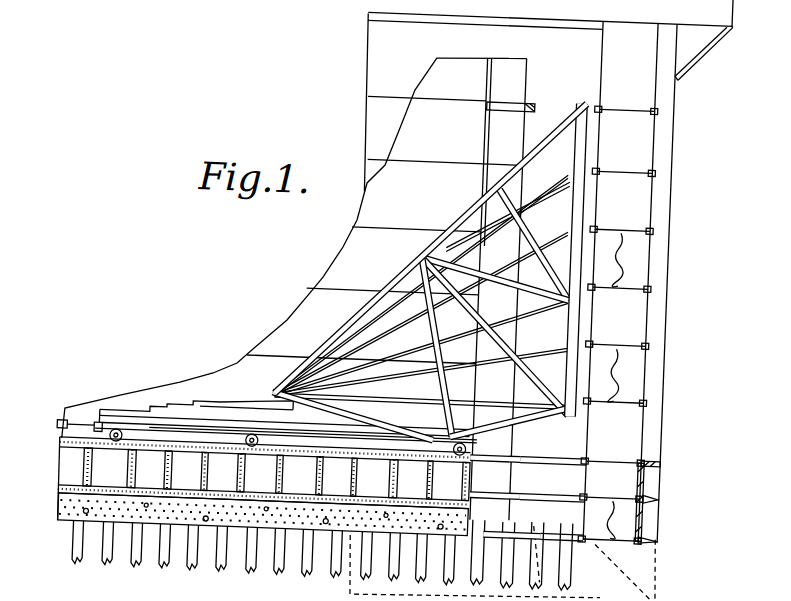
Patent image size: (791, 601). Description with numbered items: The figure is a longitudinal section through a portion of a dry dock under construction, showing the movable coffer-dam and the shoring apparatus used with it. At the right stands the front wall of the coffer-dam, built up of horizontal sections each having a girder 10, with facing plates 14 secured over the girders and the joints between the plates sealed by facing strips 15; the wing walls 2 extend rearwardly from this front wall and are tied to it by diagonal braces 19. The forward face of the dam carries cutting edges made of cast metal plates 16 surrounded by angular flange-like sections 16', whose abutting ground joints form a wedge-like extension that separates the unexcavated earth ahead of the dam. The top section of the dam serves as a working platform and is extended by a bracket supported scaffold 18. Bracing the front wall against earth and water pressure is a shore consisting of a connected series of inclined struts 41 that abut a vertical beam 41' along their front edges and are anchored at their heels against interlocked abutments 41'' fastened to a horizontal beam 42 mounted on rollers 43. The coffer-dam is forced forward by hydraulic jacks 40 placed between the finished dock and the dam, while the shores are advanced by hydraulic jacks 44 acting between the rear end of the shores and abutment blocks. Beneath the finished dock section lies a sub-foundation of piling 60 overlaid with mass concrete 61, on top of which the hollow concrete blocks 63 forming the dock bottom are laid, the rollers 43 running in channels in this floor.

The wing wall 2 is at (304, 262).
The girder 10 is at (613, 386).
The facing plate 14 is at (592, 184).
The facing strip 15 is at (592, 144).
The cast metal plate 16 is at (664, 504).
The flange-like section 16' is at (680, 318).
The bracket supported scaffold 18 is at (692, 38).
The diagonal brace 19 is at (535, 17).
The hydraulic jack 40 is at (551, 462).
The inclined strut 41 is at (430, 266).
The vertical beam 41' is at (431, 248).
The interlocked abutment 41'' is at (354, 389).
The horizontal beam 42 is at (212, 450).
The roller 43 is at (256, 447).
The hydraulic jack 44 is at (175, 401).
The piling 60 is at (316, 570).
The mass concrete 61 is at (187, 548).
The concrete block 63 is at (272, 465).